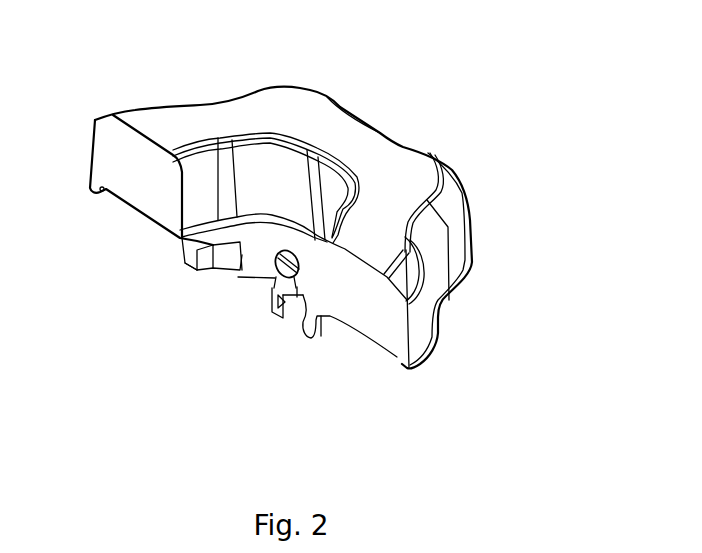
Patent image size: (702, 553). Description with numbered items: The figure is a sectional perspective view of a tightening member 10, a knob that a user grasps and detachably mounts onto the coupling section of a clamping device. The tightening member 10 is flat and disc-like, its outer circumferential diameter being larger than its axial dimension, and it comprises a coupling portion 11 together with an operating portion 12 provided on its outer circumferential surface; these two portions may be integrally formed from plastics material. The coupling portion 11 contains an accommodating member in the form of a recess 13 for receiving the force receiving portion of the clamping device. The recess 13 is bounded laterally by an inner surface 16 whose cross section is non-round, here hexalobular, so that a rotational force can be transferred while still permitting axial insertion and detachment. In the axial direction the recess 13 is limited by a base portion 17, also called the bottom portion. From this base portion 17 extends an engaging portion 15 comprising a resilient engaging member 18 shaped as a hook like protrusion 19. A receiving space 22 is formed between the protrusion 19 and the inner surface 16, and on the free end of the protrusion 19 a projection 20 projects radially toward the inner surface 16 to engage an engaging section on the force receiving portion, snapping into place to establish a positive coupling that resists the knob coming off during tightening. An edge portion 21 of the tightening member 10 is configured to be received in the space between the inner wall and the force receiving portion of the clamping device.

The tightening member 10 is at (473, 54).
The coupling portion 11 is at (200, 340).
The operating portion 12 is at (478, 182).
The recess 13 is at (208, 292).
The engaging portion 15 is at (269, 340).
The inner surface 16 is at (198, 281).
The base portion 17 is at (213, 230).
The resilient engaging member 18 is at (256, 298).
The hook like protrusion 19 is at (271, 307).
The projection 20 is at (301, 294).
The edge portion 21 is at (328, 348).
The receiving space 22 is at (290, 340).